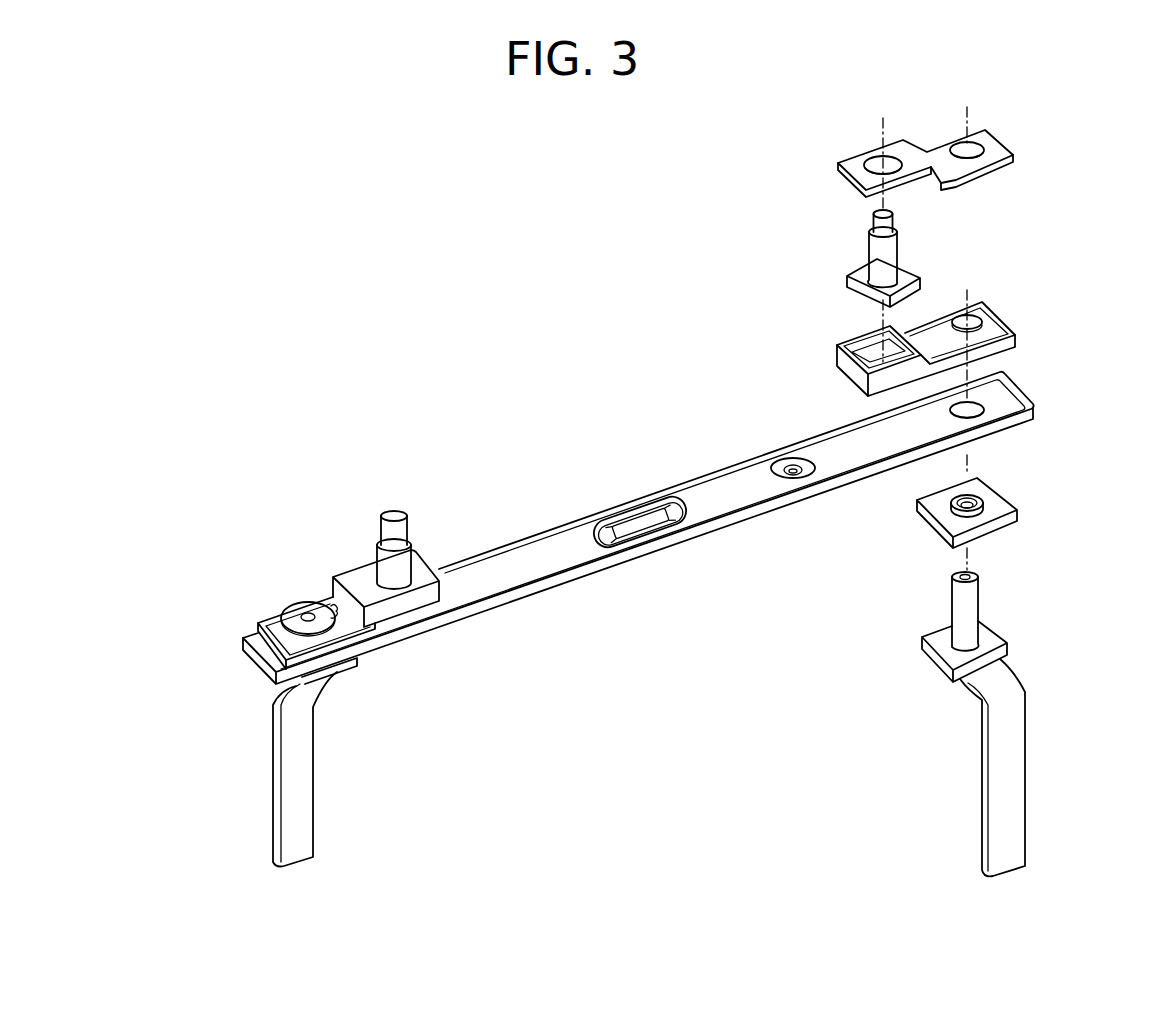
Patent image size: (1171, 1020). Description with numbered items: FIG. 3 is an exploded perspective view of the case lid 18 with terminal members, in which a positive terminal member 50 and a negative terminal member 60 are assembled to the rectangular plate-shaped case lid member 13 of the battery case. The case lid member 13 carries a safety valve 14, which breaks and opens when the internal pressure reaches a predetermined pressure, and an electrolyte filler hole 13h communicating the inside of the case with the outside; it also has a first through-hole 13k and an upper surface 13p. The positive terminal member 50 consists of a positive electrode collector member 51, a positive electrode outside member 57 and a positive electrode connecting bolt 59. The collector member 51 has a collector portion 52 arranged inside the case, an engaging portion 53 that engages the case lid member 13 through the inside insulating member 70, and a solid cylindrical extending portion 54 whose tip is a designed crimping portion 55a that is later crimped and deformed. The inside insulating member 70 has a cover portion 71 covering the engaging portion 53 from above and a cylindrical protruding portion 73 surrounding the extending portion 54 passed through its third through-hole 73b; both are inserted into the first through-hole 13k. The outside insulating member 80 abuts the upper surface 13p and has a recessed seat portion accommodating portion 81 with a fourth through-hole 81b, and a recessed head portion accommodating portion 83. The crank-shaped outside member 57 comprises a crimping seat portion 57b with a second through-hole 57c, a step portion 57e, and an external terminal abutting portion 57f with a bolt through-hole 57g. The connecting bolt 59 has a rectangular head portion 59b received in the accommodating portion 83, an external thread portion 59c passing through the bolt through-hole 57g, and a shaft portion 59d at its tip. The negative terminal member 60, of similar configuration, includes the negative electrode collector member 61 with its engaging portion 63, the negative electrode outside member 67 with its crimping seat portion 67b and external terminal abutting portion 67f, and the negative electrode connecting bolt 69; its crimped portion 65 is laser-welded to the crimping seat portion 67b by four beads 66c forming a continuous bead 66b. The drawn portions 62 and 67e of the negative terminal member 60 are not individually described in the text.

The case lid member 13 is at (600, 575).
The electrolyte filler hole 13h is at (790, 461).
The first through-hole 13k is at (978, 398).
The upper surface 13p is at (518, 557).
The safety valve 14 is at (640, 520).
The case lid with terminal members 18 is at (625, 363).
The positive terminal member 50 is at (794, 490).
The positive electrode collector member 51 is at (1013, 790).
The collector portion 52 is at (993, 812).
The engaging portion 53 is at (935, 660).
The extending portion 54 is at (963, 620).
The designed crimping portion 55a is at (958, 585).
The positive electrode outside member 57 is at (1000, 150).
The crimping seat portion 57b is at (1000, 170).
The second through-hole 57c is at (975, 150).
The step portion 57e is at (936, 186).
The external terminal abutting portion 57f is at (840, 163).
The bolt through-hole 57g is at (880, 160).
The positive electrode connecting bolt 59 is at (856, 270).
The head portion 59b is at (903, 282).
The external thread portion 59c is at (870, 256).
The shaft portion 59d is at (872, 225).
The negative terminal member 60 is at (321, 644).
The negative electrode collector member 61 is at (300, 790).
The side face 62 is at (285, 812).
The engaging portion 63 is at (340, 683).
The crimped portion 65 is at (302, 617).
The continuous bead 66b is at (345, 660).
The beads 66c is at (318, 629).
The negative electrode outside member 67 is at (338, 598).
The crimping seat portion 67b is at (290, 626).
The knurl 67e is at (332, 606).
The external terminal abutting portion 67f is at (372, 570).
The negative electrode connecting bolt 69 is at (402, 532).
The inside insulating member 70 is at (935, 530).
The cover portion 71 is at (1003, 498).
The cylindrical protruding portion 73 is at (978, 494).
The third through-hole 73b is at (930, 506).
The outside insulating member 80 is at (1016, 330).
The seat portion accommodating portion 81 is at (1003, 315).
The fourth through-hole 81b is at (975, 316).
The head portion accommodating portion 83 is at (862, 340).